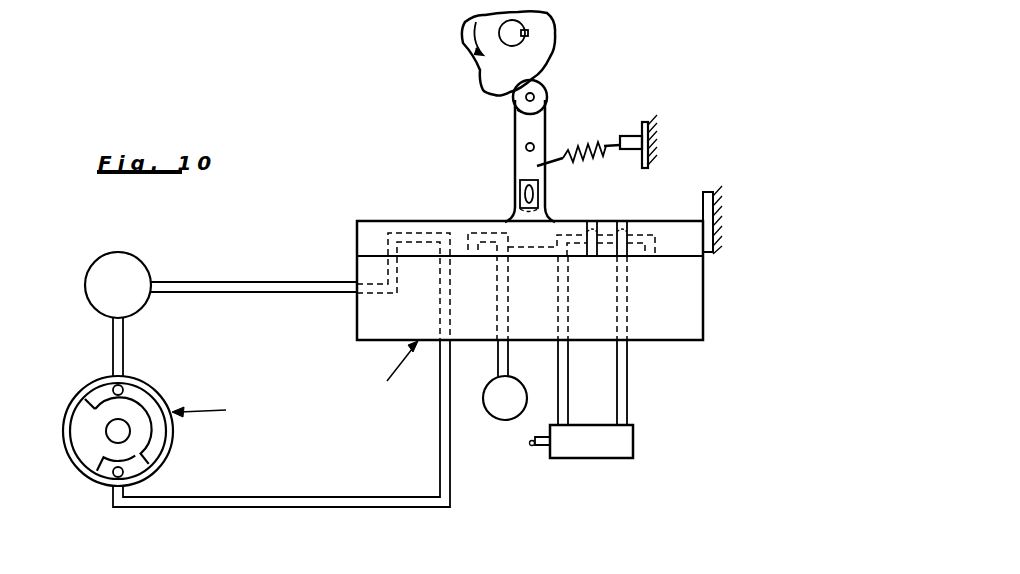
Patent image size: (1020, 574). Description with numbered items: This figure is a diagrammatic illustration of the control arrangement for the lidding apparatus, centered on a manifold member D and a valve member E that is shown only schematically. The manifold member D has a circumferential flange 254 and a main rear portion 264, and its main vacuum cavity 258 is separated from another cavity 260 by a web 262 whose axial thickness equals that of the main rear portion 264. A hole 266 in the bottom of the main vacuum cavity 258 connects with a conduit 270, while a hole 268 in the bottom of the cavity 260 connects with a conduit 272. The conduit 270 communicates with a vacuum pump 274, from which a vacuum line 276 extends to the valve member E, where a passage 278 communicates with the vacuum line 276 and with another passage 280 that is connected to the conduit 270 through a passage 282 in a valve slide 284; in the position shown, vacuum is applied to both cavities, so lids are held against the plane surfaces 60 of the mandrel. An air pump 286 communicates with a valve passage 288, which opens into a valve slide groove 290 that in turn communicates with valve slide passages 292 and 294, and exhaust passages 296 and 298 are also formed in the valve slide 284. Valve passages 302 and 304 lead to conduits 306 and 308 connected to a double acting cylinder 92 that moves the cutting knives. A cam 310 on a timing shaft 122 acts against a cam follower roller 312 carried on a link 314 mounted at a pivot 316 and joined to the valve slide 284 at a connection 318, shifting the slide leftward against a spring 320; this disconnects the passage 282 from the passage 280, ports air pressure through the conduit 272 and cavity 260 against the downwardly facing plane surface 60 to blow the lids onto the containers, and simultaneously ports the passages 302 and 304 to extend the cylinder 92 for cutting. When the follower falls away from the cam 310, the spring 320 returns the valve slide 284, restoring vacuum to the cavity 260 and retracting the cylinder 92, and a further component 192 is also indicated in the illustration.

The plane surface 60 is at (45, 0).
The component 192 is at (145, 0).
The timing shaft 122 is at (524, 25).
The cam 310 is at (555, 40).
The cam follower roller 312 is at (543, 83).
The link 314 is at (517, 126).
The pivot 316 is at (525, 147).
The connection 318 is at (520, 185).
The spring 320 is at (583, 143).
The valve slide 284 is at (366, 221).
The passage 282 is at (414, 232).
The valve slide passage 292 is at (484, 232).
The valve slide passage 294 is at (569, 232).
The exhaust passage 296 is at (597, 222).
The exhaust passage 298 is at (625, 222).
The valve slide groove 290 is at (525, 256).
The passage 278 is at (373, 295).
The passage 280 is at (440, 293).
The valve passage 288 is at (490, 298).
The valve passage 302 is at (570, 299).
The valve passage 304 is at (630, 300).
The air pump 286 is at (503, 417).
The conduit 306 is at (565, 377).
The conduit 308 is at (623, 363).
The cylinder 92 is at (635, 443).
The vacuum pump 274 is at (130, 254).
The vacuum line 276 is at (228, 281).
The conduit 270 is at (125, 334).
The circumferential flange 254 is at (166, 394).
The main rear portion 264 is at (82, 420).
The main vacuum cavity 258 is at (160, 437).
The web 262 is at (145, 457).
The hole 266 is at (123, 388).
The cavity 260 is at (107, 477).
The hole 268 is at (113, 477).
The conduit 272 is at (305, 497).
The manifold member D is at (207, 407).
The valve member E is at (395, 372).